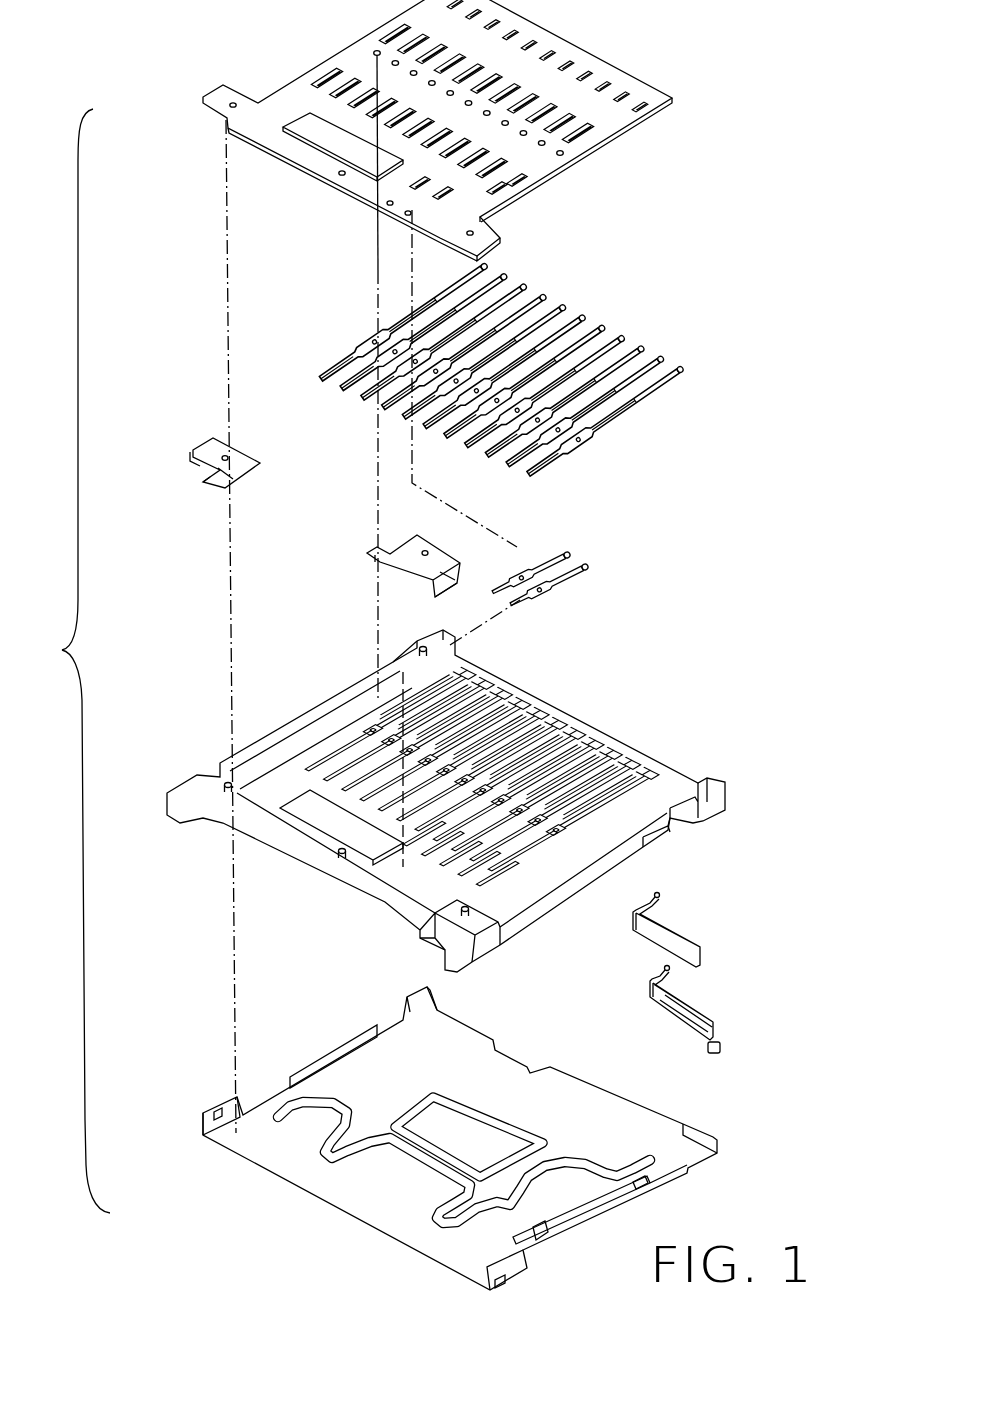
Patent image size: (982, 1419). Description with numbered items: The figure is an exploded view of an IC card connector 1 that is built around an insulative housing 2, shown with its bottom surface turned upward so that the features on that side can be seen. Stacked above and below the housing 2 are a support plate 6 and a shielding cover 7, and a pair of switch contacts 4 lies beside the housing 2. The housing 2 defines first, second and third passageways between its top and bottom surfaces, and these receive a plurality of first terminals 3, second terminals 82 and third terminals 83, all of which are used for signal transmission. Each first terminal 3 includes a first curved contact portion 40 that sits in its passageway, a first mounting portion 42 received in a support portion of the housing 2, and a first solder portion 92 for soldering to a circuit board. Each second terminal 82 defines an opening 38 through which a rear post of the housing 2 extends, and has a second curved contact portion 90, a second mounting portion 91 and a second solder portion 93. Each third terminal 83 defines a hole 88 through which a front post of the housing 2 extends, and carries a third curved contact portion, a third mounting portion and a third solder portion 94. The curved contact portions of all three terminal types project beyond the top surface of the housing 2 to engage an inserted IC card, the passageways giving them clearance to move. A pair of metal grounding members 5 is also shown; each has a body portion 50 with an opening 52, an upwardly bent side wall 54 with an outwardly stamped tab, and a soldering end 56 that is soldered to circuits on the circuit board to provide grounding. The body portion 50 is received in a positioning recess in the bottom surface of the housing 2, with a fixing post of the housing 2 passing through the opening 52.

The IC card connector 1 is at (76, 661).
The insulative housing 2 is at (577, 857).
The first terminals 3 is at (752, 340).
The switch contact 4 is at (738, 937).
The metal grounding member 5 is at (300, 518).
The support plate 6 is at (585, 97).
The shielding cover 7 is at (353, 1075).
The opening 38 is at (383, 342).
The first curved contact portion 40 is at (585, 432).
The first mounting portion 42 is at (667, 387).
The body portion 50 is at (407, 535).
The opening 52 is at (428, 548).
The upwardly bent side wall 54 is at (443, 588).
The soldering end 56 is at (164, 470).
The second terminals 82 is at (350, 240).
The third terminals 83 is at (567, 550).
The hole 88 is at (530, 575).
The second curved contact portion 90 is at (325, 378).
The second mounting portion 91 is at (413, 320).
The first solder portion 92 is at (670, 366).
The second solder portion 93 is at (487, 267).
The third solder portion 94 is at (513, 600).